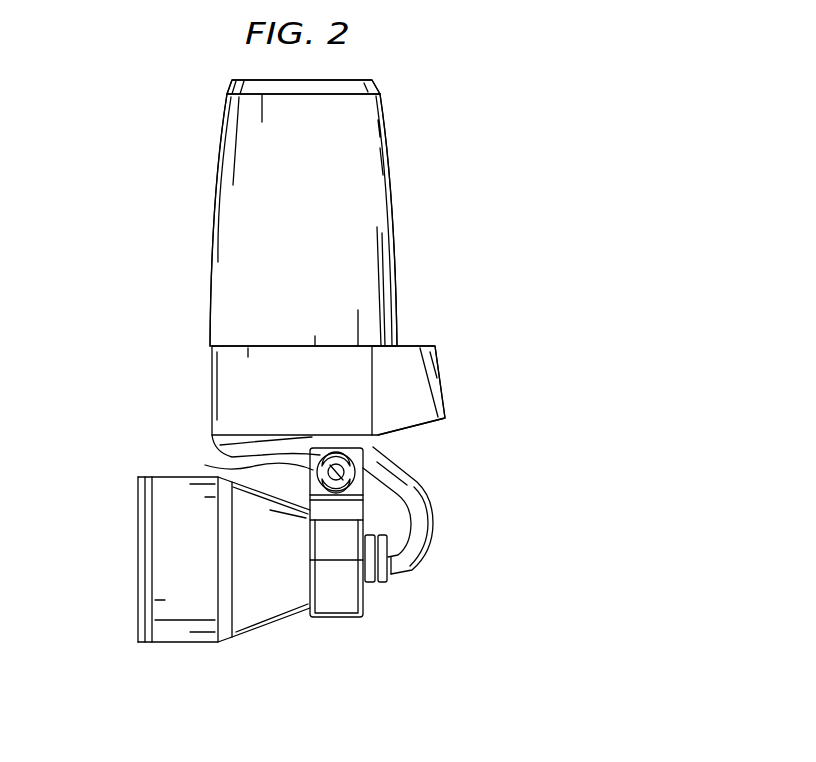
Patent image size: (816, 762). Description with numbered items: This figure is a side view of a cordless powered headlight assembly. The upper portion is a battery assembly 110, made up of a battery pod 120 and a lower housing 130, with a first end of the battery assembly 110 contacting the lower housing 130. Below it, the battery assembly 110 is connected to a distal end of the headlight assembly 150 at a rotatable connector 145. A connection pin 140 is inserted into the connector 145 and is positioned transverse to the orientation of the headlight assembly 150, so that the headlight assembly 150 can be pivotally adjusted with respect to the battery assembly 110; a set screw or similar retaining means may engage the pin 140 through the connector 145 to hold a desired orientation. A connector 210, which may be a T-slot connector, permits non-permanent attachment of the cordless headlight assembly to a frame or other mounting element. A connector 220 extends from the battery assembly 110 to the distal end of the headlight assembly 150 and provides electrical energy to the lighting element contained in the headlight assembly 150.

The battery assembly 110 is at (178, 80).
The battery pod 120 is at (357, 195).
The lower housing 130 is at (338, 385).
The connection pin 140 is at (337, 475).
The connector 145 is at (205, 465).
The headlight assembly 150 is at (163, 543).
The connector 210 is at (443, 398).
The connector 220 is at (418, 556).